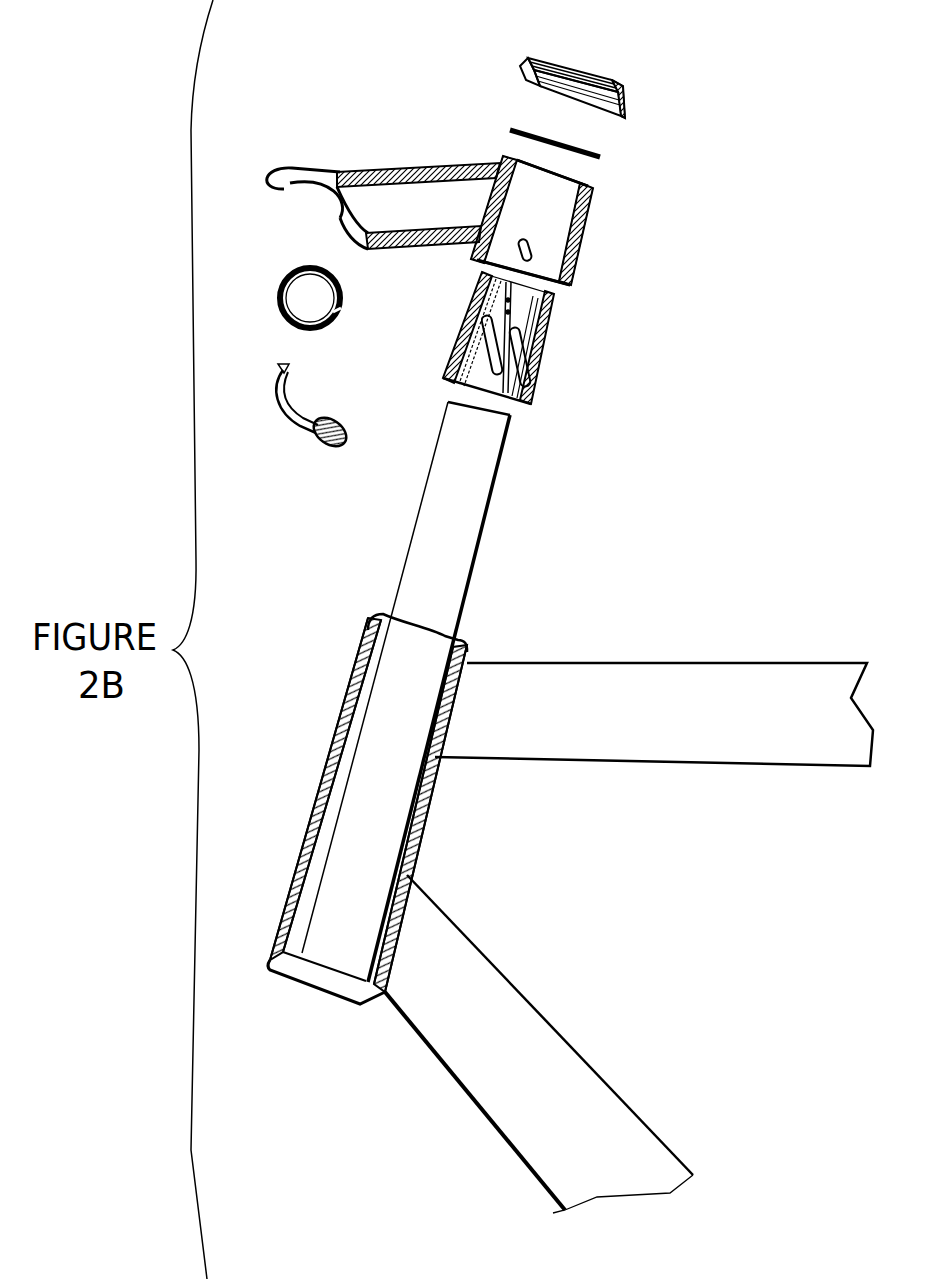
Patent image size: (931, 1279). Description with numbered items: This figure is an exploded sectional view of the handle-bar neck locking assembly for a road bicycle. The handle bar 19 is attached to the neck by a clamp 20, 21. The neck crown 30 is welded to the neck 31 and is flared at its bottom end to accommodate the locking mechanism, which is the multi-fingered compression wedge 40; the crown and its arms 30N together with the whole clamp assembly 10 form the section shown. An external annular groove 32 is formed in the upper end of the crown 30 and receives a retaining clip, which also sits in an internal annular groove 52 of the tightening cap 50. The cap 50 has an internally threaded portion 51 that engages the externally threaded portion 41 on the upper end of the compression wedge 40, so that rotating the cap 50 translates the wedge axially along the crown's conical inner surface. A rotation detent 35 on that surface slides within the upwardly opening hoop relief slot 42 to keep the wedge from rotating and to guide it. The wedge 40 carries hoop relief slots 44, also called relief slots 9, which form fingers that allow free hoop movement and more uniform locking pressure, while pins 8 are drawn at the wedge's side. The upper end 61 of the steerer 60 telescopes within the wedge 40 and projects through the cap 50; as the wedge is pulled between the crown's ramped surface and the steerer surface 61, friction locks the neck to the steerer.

The pins 8 is at (455, 363).
The hoop relief slots 9 is at (547, 312).
The seat post clamp 10 is at (510, 250).
The handle bar 19 is at (280, 307).
The clamp 20 is at (312, 432).
The clamp 21 is at (293, 165).
The neck crown 30 is at (586, 230).
The clamp arms 30N is at (387, 173).
The neck 31 is at (572, 284).
The external annular groove 32 is at (595, 193).
The rotation detent 35 is at (525, 240).
The multi-fingered compression wedge 40 is at (536, 368).
The externally threaded portion 41 is at (557, 300).
The upwardly opening hoop relief slot 42 is at (506, 300).
The hoop relief slots 44 is at (468, 386).
The tightening cap 50 is at (622, 94).
The internally threaded portion 51 is at (590, 72).
The internal annular groove 52 is at (597, 107).
The steerer 60 is at (400, 818).
The upper end of steerer 61 is at (478, 535).